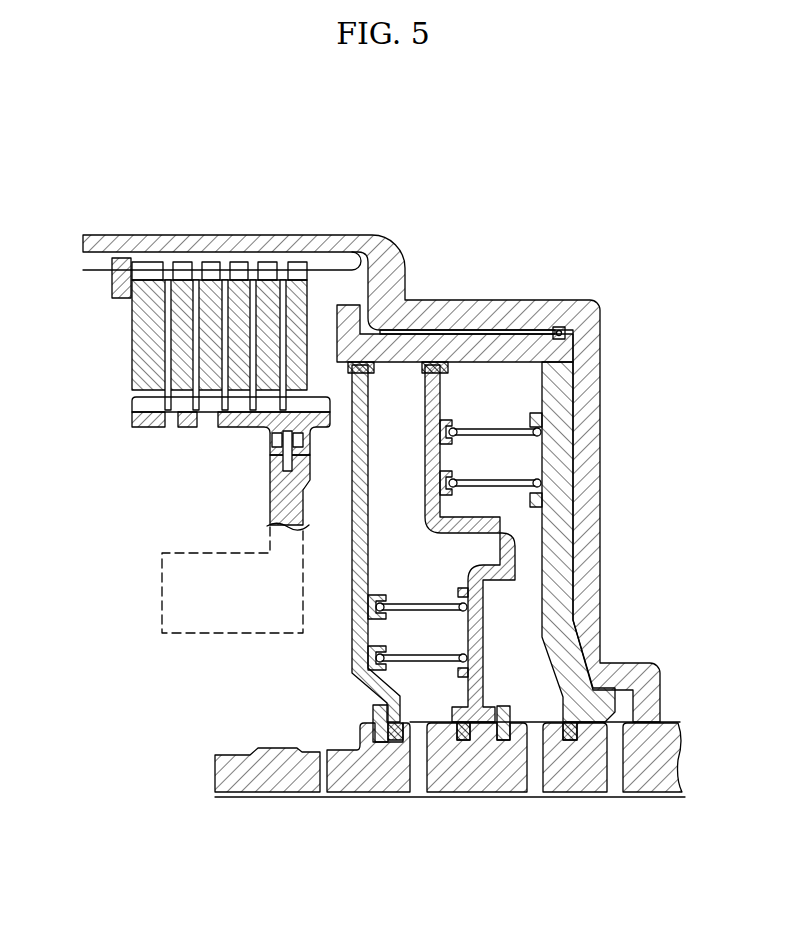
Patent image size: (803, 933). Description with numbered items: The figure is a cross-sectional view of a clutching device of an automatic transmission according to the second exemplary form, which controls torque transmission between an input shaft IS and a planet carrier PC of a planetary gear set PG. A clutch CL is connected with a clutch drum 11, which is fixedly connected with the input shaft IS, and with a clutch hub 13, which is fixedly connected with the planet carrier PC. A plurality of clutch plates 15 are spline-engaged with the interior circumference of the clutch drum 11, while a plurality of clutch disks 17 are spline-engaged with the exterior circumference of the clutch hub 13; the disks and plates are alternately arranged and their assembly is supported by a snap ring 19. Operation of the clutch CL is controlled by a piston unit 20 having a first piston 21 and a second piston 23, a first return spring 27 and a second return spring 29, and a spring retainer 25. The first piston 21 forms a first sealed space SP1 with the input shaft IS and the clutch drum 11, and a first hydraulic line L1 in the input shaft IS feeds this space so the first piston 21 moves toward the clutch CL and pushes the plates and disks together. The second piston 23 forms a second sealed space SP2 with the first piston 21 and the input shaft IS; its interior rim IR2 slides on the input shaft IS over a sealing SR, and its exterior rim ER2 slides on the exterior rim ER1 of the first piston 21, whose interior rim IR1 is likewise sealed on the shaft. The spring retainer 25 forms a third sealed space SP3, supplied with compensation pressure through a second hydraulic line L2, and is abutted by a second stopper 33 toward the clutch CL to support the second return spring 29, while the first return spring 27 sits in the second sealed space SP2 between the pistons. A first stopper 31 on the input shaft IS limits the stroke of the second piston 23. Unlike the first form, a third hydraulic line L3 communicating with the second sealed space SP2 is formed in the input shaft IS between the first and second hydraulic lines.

The clutch drum 11 is at (600, 366).
The clutch hub 13 is at (152, 425).
The clutch plates 15 is at (213, 290).
The clutch disks 17 is at (283, 290).
The snap ring 19 is at (150, 268).
The piston unit 20 is at (672, 405).
The first piston 21 is at (565, 512).
The second piston 23 is at (442, 464).
The spring retainer 25 is at (355, 565).
The first return spring 27 is at (497, 432).
The second return spring 29 is at (435, 608).
The first stopper 31 is at (511, 742).
The second stopper 33 is at (370, 708).
The clutch CL is at (88, 341).
The planet carrier PC is at (275, 497).
The planetary gear set PG is at (162, 593).
The sealing SR is at (372, 362).
The exterior rim of the first piston ER1 is at (507, 350).
The exterior rim of the second piston ER2 is at (428, 385).
The first sealed space SP1 is at (625, 707).
The second sealed space SP2 is at (515, 662).
The third sealed space SP3 is at (413, 683).
The interior rim of the first piston IR1 is at (617, 682).
The interior rim of the second piston IR2 is at (500, 742).
The input shaft IS is at (437, 777).
The first hydraulic line L1 is at (622, 773).
The second hydraulic line L2 is at (410, 773).
The third hydraulic line L3 is at (538, 773).